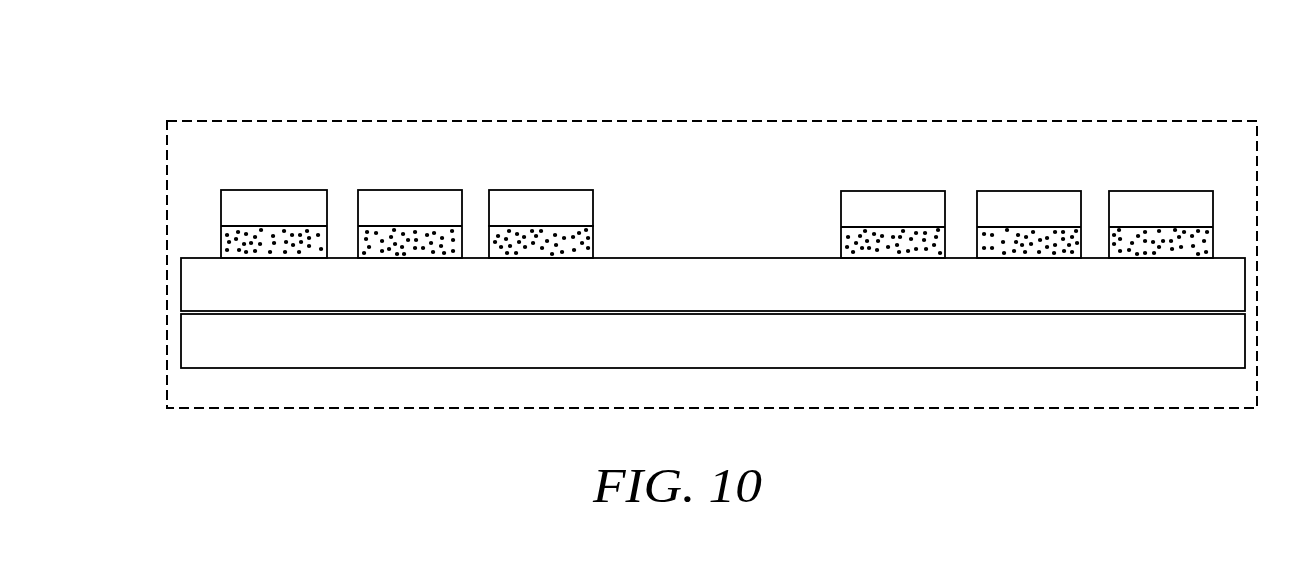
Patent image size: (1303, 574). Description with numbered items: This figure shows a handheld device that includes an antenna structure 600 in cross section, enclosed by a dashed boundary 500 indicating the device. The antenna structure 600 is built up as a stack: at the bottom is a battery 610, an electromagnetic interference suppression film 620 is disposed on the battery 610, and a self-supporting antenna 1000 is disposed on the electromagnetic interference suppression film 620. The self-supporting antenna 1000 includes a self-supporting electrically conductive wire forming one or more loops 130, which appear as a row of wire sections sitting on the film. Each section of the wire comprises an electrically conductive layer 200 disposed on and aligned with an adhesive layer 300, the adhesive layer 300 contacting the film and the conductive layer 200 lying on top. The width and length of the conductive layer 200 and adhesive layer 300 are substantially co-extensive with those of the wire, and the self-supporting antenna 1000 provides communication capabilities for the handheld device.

The self-supporting antenna 1000 is at (174, 208).
The encapsulation layer 500 is at (211, 121).
The loops 130 is at (717, 199).
The electrically conductive layer 200 is at (585, 202).
The adhesive layer 300 is at (585, 242).
The electromagnetic interference suppression film 620 is at (181, 278).
The battery 610 is at (181, 347).
The antenna structure 600 is at (672, 364).